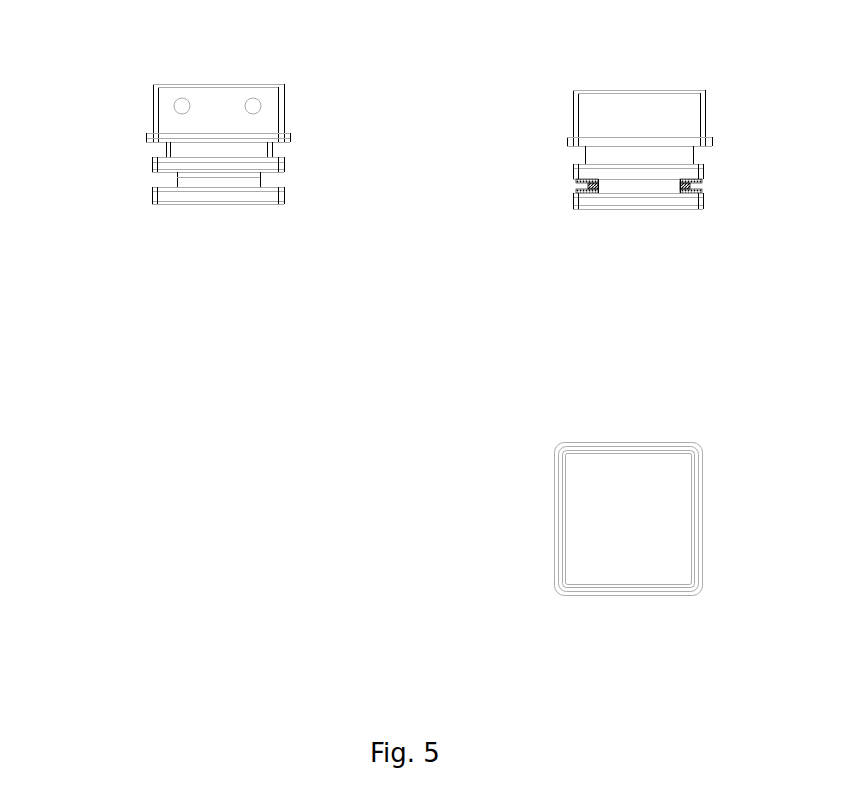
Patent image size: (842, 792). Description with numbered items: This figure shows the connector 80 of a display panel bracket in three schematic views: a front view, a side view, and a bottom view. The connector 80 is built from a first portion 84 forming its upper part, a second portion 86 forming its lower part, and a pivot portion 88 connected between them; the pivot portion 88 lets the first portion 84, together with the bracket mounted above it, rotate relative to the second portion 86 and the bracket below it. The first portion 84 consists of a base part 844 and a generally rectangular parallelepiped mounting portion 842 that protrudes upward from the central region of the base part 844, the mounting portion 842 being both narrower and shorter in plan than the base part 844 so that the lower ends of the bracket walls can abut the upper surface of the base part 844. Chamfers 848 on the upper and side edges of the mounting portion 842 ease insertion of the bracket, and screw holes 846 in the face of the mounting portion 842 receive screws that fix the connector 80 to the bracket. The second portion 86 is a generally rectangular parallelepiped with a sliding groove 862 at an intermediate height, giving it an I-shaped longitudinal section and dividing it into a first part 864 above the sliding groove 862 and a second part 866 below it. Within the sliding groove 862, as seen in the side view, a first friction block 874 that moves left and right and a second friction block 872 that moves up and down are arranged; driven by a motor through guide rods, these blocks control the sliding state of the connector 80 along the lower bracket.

The connector 80 is at (108, 50).
The first portion 84 is at (147, 125).
The mounting portion 842 is at (268, 103).
The base part 844 is at (268, 139).
The screw holes 846 is at (256, 100).
The chamfers 848 is at (153, 85).
The pivot portion 88 is at (164, 150).
The second portion 86 is at (152, 196).
The sliding groove 862 is at (273, 180).
The first part 864 is at (270, 166).
The second part 866 is at (258, 195).
The second friction block 872 is at (698, 190).
The first friction block 874 is at (683, 184).